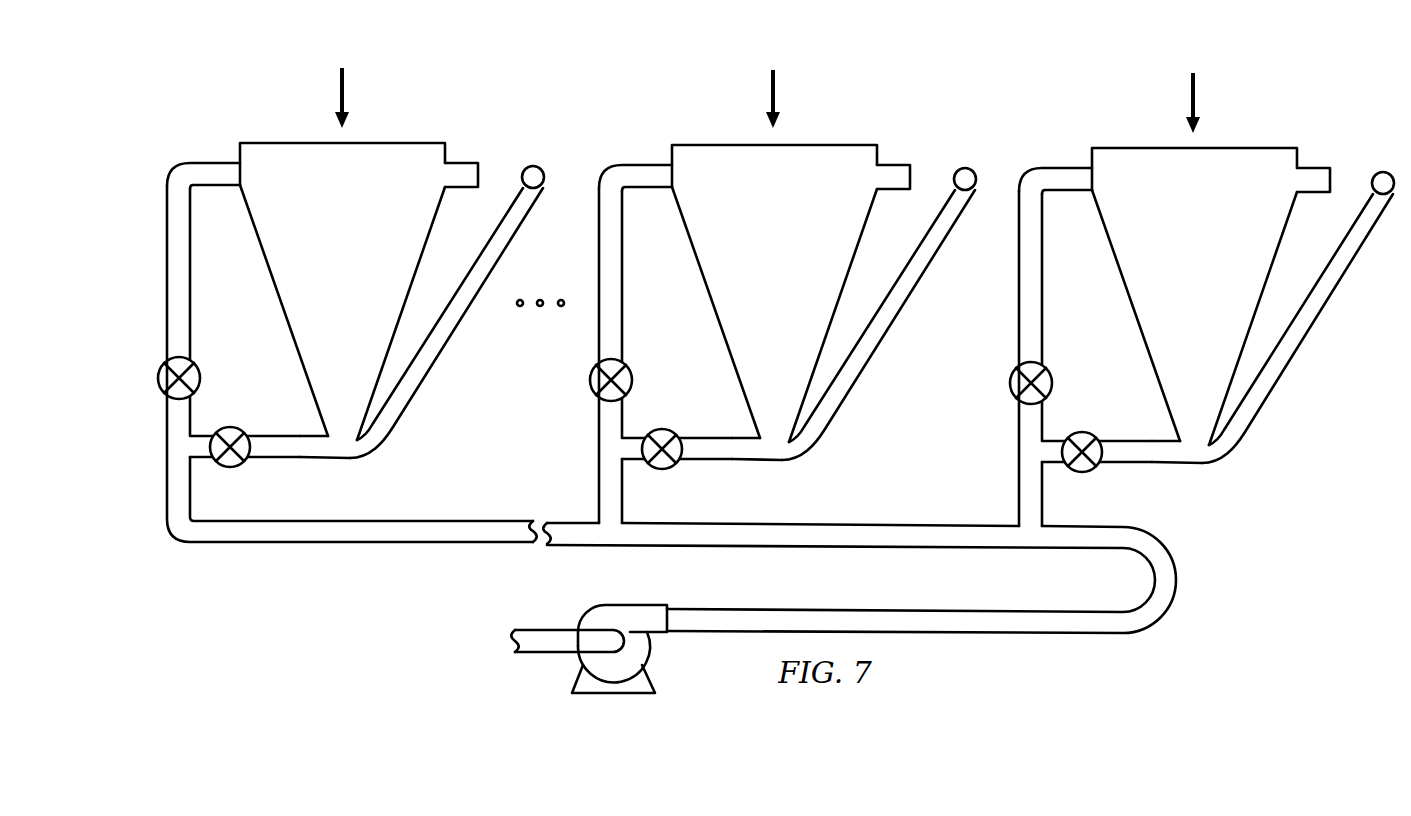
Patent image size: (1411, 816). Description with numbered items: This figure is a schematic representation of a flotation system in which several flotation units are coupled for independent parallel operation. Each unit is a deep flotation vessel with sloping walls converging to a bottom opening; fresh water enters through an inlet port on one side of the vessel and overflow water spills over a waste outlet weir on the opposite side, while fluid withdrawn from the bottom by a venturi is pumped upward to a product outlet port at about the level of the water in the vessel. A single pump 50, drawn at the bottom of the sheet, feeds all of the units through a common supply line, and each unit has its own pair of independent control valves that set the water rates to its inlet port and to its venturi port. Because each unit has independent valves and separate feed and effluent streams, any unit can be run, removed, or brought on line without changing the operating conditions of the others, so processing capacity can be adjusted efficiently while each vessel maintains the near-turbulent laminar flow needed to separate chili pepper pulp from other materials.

The pump 50 is at (610, 693).